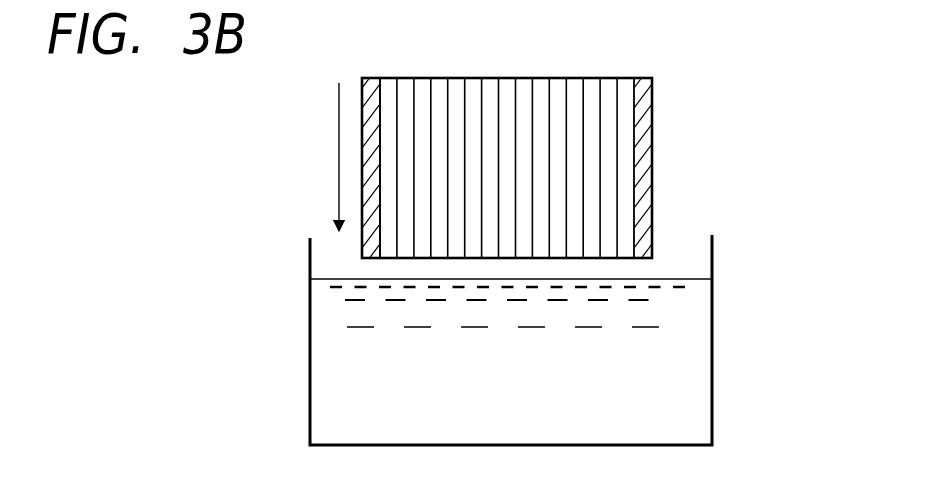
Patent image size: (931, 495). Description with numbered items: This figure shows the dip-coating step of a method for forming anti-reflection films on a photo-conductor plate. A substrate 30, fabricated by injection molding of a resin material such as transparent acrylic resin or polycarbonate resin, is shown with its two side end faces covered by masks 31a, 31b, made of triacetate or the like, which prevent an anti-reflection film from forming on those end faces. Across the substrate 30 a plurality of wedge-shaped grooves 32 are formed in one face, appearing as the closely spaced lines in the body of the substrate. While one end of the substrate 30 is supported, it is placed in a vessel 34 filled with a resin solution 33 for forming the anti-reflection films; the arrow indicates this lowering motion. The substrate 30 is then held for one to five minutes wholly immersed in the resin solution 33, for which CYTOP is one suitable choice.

The substrate 30 is at (511, 153).
The mask 31a is at (653, 98).
The mask 31b is at (362, 95).
The wedge-shaped grooves 32 is at (462, 96).
The resin solution 33 is at (702, 367).
The vessel 34 is at (713, 255).